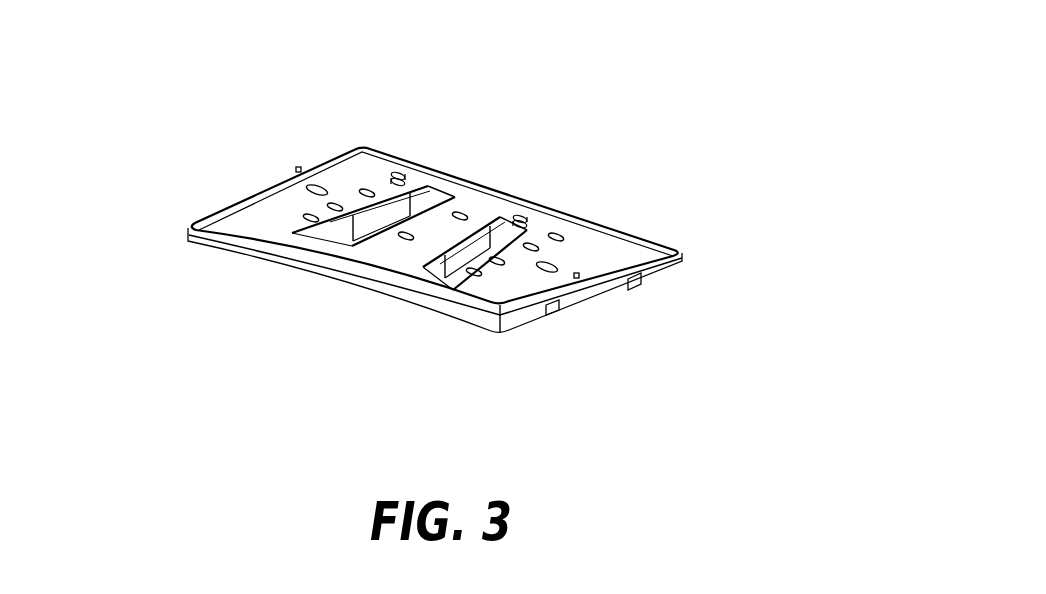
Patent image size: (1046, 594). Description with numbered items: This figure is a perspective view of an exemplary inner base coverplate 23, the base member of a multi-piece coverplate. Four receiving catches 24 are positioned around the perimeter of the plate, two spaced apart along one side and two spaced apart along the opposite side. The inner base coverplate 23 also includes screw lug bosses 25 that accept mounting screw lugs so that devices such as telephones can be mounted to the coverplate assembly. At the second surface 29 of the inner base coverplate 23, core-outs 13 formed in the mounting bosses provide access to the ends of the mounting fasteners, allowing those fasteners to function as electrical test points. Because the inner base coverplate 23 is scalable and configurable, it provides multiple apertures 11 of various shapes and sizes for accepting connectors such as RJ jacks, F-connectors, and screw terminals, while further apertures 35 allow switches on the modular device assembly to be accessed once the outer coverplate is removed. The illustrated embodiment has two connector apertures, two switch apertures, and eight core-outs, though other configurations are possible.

The apertures 11 is at (401, 176).
The core-outs 13 is at (358, 193).
The inner base coverplate 23 is at (688, 165).
The receiving catches 24 is at (634, 277).
The screw lug bosses 25 is at (297, 167).
The second surface 29 is at (352, 167).
The apertures 35 is at (461, 212).